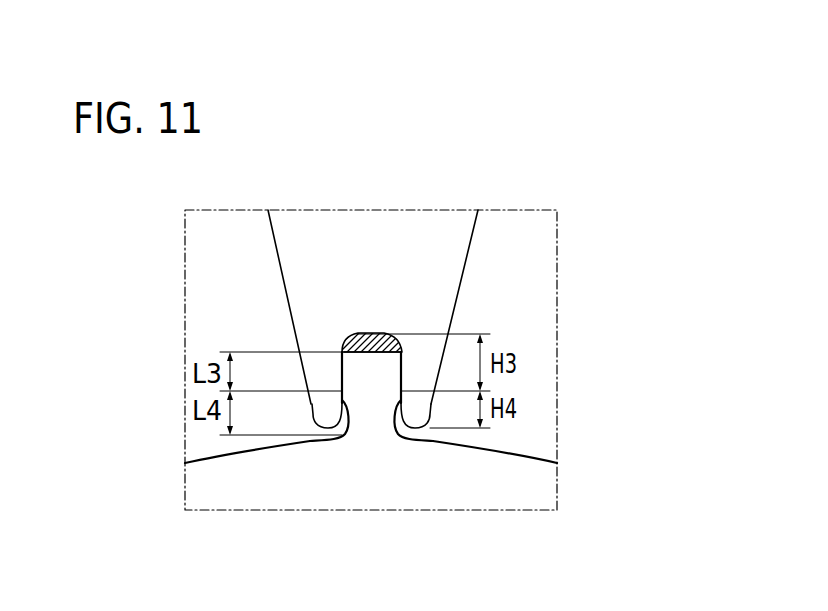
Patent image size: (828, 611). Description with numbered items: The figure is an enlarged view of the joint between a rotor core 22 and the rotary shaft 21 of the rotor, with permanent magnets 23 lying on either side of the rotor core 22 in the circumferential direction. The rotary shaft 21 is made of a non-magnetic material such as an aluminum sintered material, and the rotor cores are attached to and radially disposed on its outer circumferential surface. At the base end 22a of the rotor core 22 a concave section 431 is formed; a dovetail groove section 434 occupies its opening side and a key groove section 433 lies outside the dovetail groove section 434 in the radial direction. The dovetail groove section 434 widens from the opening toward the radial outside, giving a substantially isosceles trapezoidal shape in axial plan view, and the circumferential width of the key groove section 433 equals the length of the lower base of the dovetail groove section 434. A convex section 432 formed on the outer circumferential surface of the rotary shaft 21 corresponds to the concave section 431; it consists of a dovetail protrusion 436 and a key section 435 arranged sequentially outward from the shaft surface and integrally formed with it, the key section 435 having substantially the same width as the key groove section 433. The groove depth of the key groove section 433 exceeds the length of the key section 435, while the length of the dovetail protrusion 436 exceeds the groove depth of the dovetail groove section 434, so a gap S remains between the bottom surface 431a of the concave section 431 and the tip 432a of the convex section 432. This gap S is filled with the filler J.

The rotary shaft 21 is at (517, 497).
The rotor core 22 is at (373, 212).
The base end 22a is at (437, 398).
The permanent magnet 23 is at (185, 236).
The concave section 431 is at (433, 568).
The bottom surface 431a is at (355, 333).
The convex section 432 is at (102, 463).
The tip 432a is at (380, 352).
The key groove section 433 is at (397, 360).
The dovetail groove section 434 is at (397, 405).
The key section 435 is at (341, 363).
The dovetail protrusion 436 is at (313, 405).
The gap S is at (342, 348).
The filler J is at (372, 349).